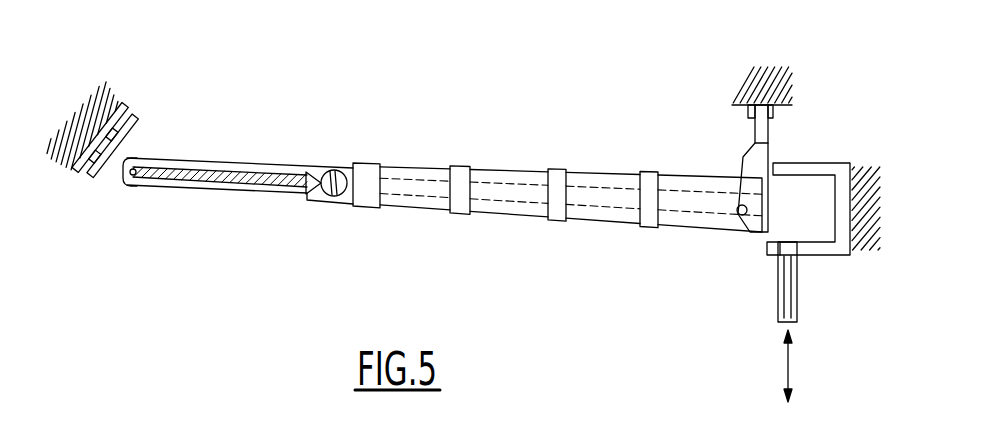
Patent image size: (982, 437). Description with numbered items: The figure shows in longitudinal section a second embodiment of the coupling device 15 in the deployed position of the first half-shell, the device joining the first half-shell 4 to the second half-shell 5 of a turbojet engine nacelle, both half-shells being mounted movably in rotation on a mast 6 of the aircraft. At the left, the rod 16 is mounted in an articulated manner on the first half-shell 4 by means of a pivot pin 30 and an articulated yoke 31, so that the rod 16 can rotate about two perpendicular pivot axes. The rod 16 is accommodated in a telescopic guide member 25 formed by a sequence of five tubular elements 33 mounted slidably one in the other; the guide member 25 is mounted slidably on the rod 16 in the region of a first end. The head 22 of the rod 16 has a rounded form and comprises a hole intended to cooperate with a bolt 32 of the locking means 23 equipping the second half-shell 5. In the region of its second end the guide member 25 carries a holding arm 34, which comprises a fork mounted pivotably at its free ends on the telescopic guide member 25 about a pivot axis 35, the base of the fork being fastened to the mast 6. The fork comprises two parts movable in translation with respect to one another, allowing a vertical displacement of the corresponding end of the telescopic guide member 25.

The first half-shell 4 is at (90, 138).
The articulated yoke 31 is at (130, 155).
The rod 16 is at (218, 173).
The tubular elements 33 is at (320, 184).
The second coupling device 15 is at (438, 175).
The telescopic guide member 25 is at (517, 240).
The pivot pin 30 is at (143, 185).
The head 22 is at (323, 186).
The mast 6 is at (765, 88).
The holding arm 34 is at (750, 160).
The pivot axis 35 is at (740, 218).
The locking means 23 is at (820, 170).
The second half-shell 5 is at (867, 268).
The bolt 32 is at (788, 275).